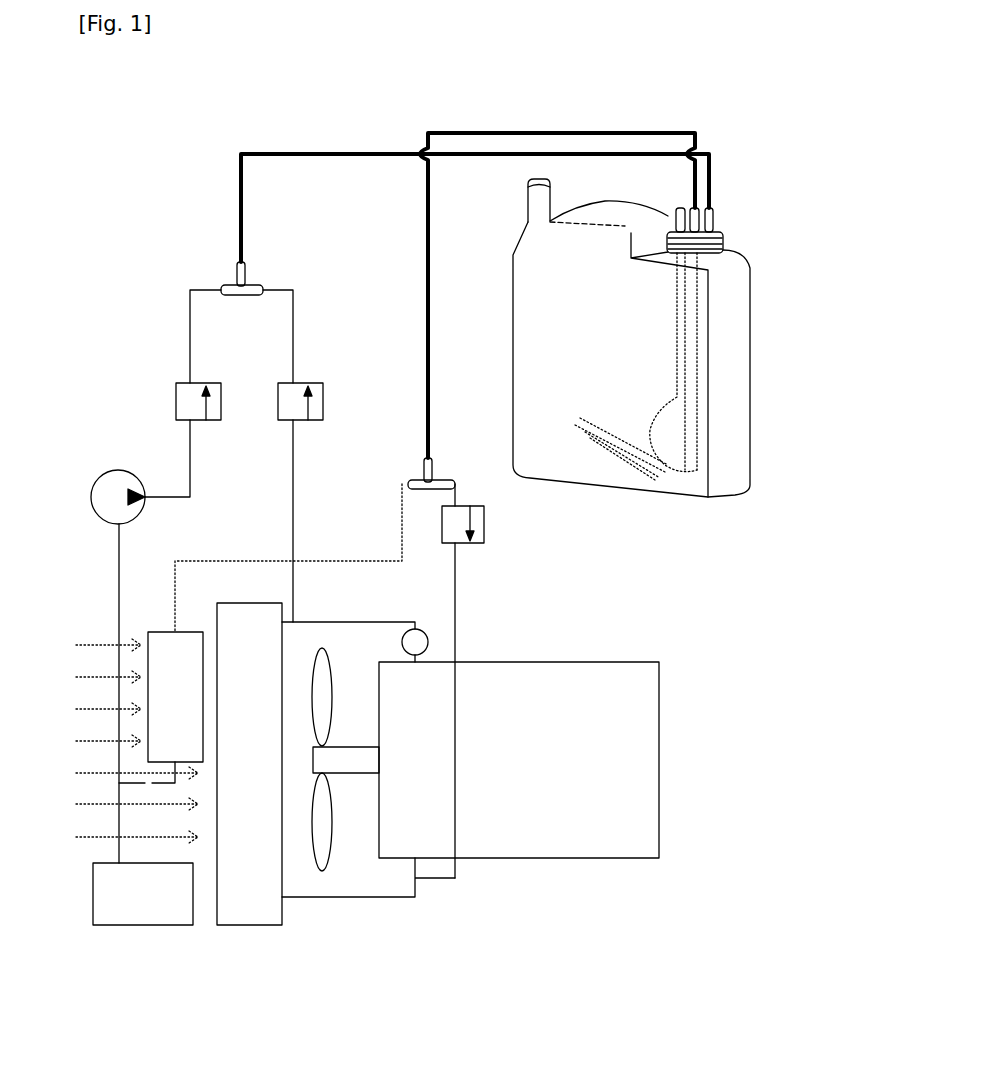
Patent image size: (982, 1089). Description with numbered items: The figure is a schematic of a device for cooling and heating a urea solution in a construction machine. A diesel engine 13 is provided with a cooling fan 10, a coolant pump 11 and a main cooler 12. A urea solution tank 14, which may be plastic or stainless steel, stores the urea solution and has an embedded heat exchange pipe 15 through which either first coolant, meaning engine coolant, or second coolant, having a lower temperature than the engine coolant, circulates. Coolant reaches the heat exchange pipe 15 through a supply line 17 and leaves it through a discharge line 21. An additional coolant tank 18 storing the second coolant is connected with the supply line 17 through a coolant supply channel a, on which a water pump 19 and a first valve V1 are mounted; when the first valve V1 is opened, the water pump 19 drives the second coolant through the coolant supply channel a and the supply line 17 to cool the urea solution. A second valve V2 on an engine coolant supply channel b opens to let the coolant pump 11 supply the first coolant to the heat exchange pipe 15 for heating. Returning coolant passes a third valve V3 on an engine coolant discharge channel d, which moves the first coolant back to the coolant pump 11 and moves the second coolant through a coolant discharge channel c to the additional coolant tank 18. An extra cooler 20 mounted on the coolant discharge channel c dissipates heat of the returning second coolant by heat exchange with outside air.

The cooling fan 10 is at (325, 845).
The coolant pump 11 is at (428, 640).
The main cooler 12 is at (244, 925).
The diesel engine 13 is at (637, 768).
The urea solution tank 14 is at (735, 240).
The heat exchange pipe 15 is at (673, 480).
The supply line 17 is at (345, 152).
The additional coolant tank 18 is at (140, 925).
The water pump 19 is at (130, 470).
The extra cooler 20 is at (162, 632).
The discharge line 21 is at (592, 130).
The first valve V1 is at (185, 380).
The second valve V2 is at (312, 380).
The third valve V3 is at (485, 522).
The coolant supply channel a is at (115, 560).
The engine coolant supply channel b is at (297, 452).
The coolant discharge channel c is at (247, 556).
The engine coolant discharge channel d is at (458, 598).